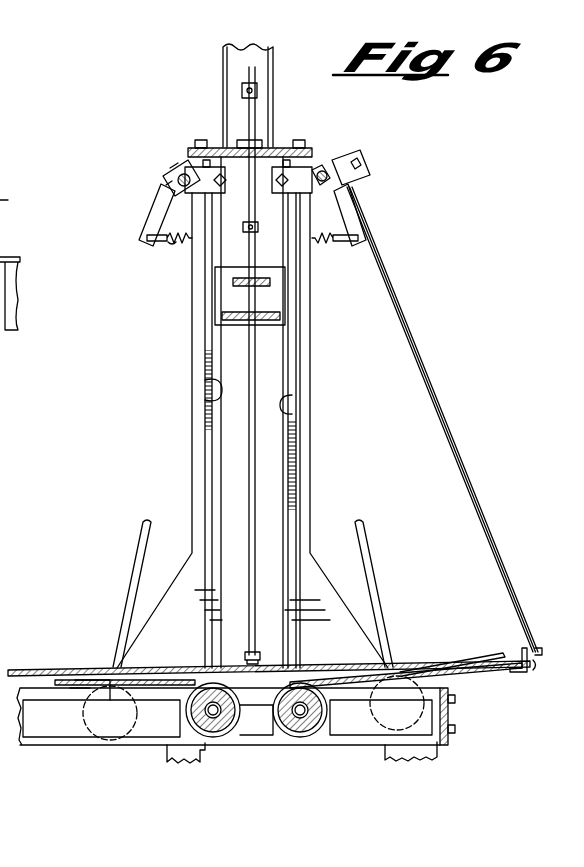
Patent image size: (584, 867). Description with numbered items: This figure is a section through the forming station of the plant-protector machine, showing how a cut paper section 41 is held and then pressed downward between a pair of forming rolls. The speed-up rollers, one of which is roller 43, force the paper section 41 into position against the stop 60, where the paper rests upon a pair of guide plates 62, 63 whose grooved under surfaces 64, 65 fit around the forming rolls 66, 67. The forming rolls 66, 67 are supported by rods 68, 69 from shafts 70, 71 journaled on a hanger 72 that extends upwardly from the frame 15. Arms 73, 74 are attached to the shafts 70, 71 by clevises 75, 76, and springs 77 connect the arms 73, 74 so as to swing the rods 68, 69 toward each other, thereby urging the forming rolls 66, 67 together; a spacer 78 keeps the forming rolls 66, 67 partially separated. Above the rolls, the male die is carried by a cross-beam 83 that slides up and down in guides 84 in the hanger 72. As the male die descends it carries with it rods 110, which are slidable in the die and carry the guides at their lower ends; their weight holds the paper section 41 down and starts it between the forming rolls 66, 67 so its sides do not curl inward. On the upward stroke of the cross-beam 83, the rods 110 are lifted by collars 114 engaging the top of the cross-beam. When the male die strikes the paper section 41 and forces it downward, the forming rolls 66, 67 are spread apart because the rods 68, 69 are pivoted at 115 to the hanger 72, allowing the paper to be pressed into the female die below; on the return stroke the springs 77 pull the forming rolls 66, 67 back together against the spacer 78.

The frame 15 is at (425, 762).
The paper section 41 is at (168, 670).
The speed-up roller 43 is at (10, 194).
The stop 60 is at (538, 665).
The guide plate 62 is at (165, 690).
The guide plate 63 is at (455, 680).
The grooved under surface 64 is at (225, 736).
The grooved under surface 65 is at (290, 736).
The forming roll 66 is at (210, 740).
The forming roll 67 is at (318, 740).
The rod 68 is at (208, 455).
The rod 69 is at (296, 470).
The shaft 70 is at (170, 176).
The shaft 71 is at (332, 162).
The hanger 72 is at (312, 345).
The arm 73 is at (160, 215).
The arm 74 is at (348, 222).
The clevis 75 is at (180, 165).
The clevis 76 is at (318, 165).
The spring 77 is at (170, 246).
The spacer 78 is at (257, 715).
The cross-beam 83 is at (258, 300).
The guide 84 is at (210, 400).
The rod 110 is at (256, 572).
The collar 114 is at (245, 232).
The pivot 115 is at (278, 182).